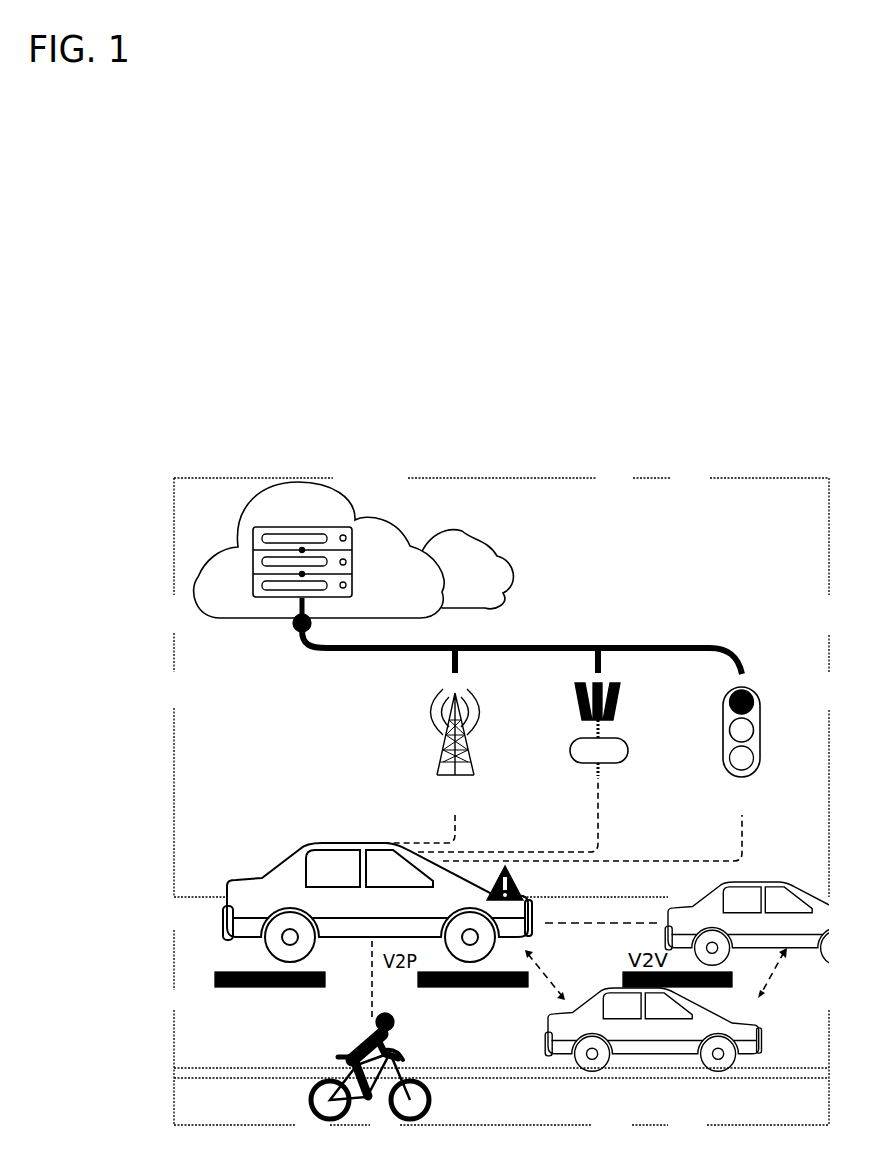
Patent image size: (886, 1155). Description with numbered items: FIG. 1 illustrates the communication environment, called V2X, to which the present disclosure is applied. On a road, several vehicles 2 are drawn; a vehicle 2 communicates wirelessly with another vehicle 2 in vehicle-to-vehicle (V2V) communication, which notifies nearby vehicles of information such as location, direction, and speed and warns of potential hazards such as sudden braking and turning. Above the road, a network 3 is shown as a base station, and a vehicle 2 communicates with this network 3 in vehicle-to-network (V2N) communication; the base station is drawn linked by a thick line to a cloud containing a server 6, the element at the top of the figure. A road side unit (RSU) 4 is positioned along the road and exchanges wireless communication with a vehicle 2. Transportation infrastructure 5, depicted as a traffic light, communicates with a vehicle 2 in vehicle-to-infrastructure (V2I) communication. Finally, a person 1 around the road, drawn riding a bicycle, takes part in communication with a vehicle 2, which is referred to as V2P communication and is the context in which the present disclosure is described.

The person 1 is at (395, 1018).
The vehicle 2 is at (365, 843).
The network 3 is at (436, 749).
The road side unit (RSU) 4 is at (570, 750).
The transportation infrastructure 5 is at (723, 726).
The server / cloud network 6 is at (353, 513).